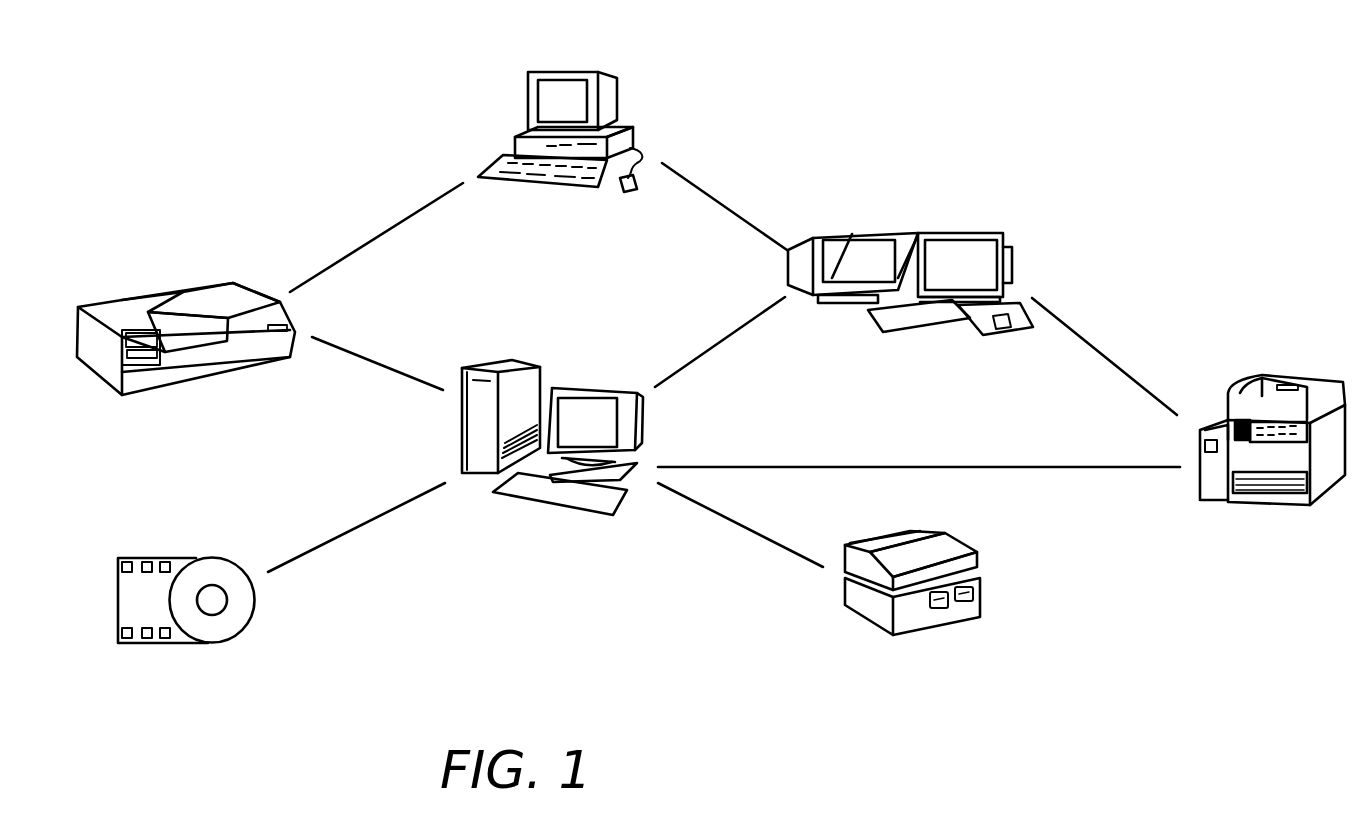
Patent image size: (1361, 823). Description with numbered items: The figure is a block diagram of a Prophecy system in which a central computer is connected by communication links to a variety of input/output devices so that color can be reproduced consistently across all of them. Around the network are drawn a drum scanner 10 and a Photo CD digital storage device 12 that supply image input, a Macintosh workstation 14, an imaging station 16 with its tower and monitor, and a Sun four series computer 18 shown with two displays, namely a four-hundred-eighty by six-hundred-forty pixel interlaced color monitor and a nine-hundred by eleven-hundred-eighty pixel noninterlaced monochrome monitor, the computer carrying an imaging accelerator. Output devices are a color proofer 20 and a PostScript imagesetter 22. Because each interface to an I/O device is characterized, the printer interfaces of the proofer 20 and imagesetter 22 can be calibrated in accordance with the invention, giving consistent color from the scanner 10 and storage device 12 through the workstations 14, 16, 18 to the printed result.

The scanner 10 is at (208, 292).
The film / storage medium 12 is at (197, 557).
The personal computer 14 is at (617, 80).
The computer workstation 16 is at (542, 373).
The dual-monitor workstation 18 is at (1003, 242).
The peripheral device 20 is at (973, 545).
The printer 22 is at (1347, 343).